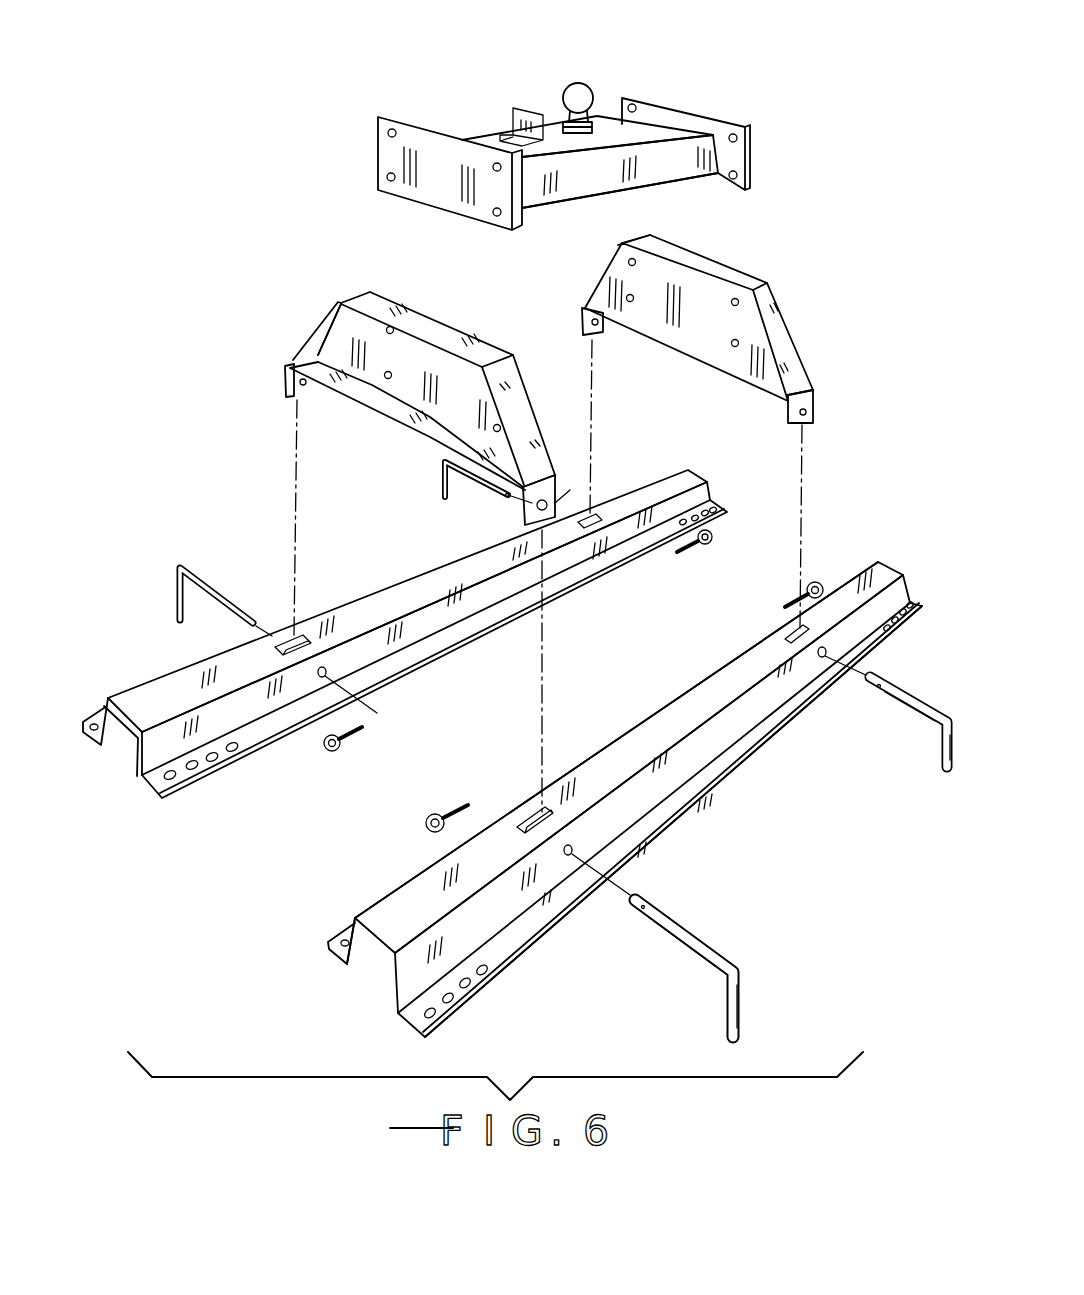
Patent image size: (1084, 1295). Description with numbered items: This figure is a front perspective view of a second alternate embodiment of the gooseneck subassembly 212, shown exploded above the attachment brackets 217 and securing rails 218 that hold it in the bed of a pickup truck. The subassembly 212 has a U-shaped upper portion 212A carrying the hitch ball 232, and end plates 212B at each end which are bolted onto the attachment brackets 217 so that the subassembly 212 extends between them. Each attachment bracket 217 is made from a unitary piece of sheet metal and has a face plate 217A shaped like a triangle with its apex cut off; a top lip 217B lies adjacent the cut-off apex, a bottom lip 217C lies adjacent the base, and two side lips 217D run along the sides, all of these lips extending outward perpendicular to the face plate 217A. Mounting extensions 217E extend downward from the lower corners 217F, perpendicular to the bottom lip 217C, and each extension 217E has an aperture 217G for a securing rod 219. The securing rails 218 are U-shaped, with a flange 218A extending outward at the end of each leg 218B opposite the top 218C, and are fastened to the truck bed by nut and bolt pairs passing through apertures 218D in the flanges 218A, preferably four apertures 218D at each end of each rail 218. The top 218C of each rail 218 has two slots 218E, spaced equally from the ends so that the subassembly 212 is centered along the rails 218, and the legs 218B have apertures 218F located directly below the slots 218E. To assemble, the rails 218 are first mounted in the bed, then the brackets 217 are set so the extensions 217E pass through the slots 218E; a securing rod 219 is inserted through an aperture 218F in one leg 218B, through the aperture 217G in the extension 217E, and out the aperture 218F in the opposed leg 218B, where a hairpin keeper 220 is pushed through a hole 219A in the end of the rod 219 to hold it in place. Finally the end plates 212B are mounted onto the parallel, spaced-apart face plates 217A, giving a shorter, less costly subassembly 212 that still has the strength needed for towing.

The second alternate subassembly 212 is at (642, 120).
The U-shaped upper portion 212A is at (687, 168).
The end plates 212B is at (383, 117).
The hitch ball 232 is at (572, 84).
The attachment brackets 217 is at (322, 340).
The face plate 217A is at (700, 318).
The top lip 217B is at (438, 330).
The bottom lip 217C is at (395, 413).
The side lips 217D is at (328, 323).
The mounting extensions 217E is at (287, 378).
The lower corners 217F is at (582, 307).
The apertures 217G is at (570, 490).
The securing rails 218 is at (258, 735).
The flange 218A is at (405, 658).
The leg 218B is at (363, 950).
The top 218C is at (417, 895).
The apertures 218D is at (455, 998).
The slots 218E is at (548, 808).
The apertures 218F is at (575, 848).
The securing rods 219 is at (720, 953).
The holes 219A is at (642, 910).
The hairpin keepers 220 is at (433, 820).